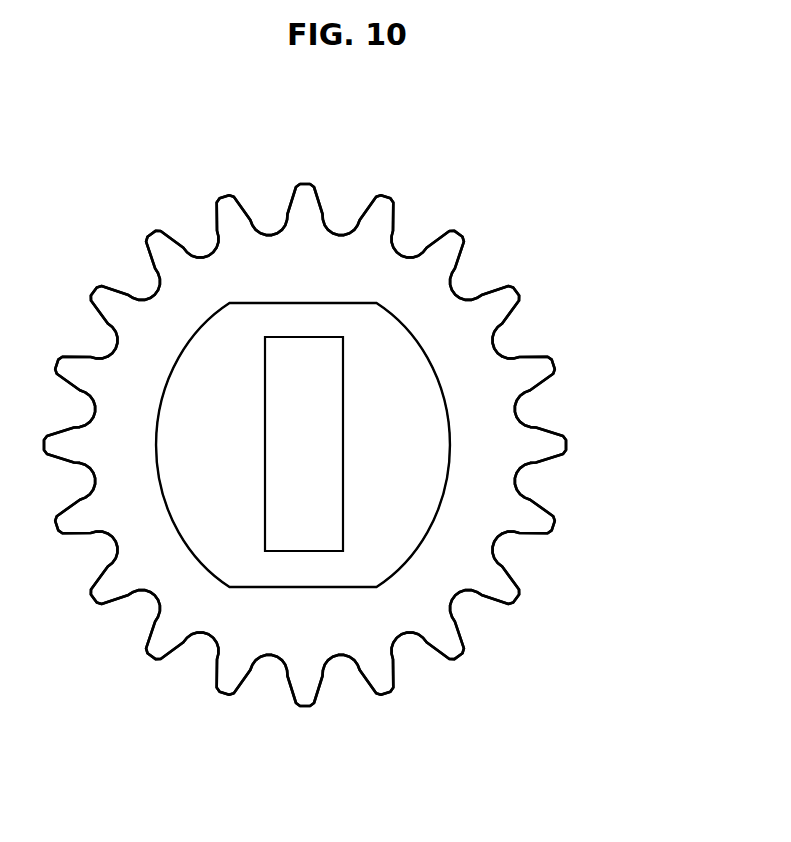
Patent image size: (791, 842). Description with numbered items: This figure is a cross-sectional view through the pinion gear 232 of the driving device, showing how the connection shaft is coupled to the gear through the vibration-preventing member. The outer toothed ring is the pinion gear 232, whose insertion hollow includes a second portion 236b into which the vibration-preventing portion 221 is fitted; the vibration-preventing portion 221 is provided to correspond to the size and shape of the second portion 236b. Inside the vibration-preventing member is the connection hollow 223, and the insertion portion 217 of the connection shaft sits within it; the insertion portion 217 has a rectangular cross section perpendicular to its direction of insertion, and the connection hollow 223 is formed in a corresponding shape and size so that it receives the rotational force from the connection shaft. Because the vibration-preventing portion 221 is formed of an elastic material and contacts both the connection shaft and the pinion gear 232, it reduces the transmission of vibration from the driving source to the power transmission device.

The pinion gear 232 is at (437, 247).
The second portion 236b is at (407, 350).
The vibration-preventing portion 221 is at (428, 415).
The connection hollow 223 is at (342, 491).
The insertion portion 217 is at (295, 530).